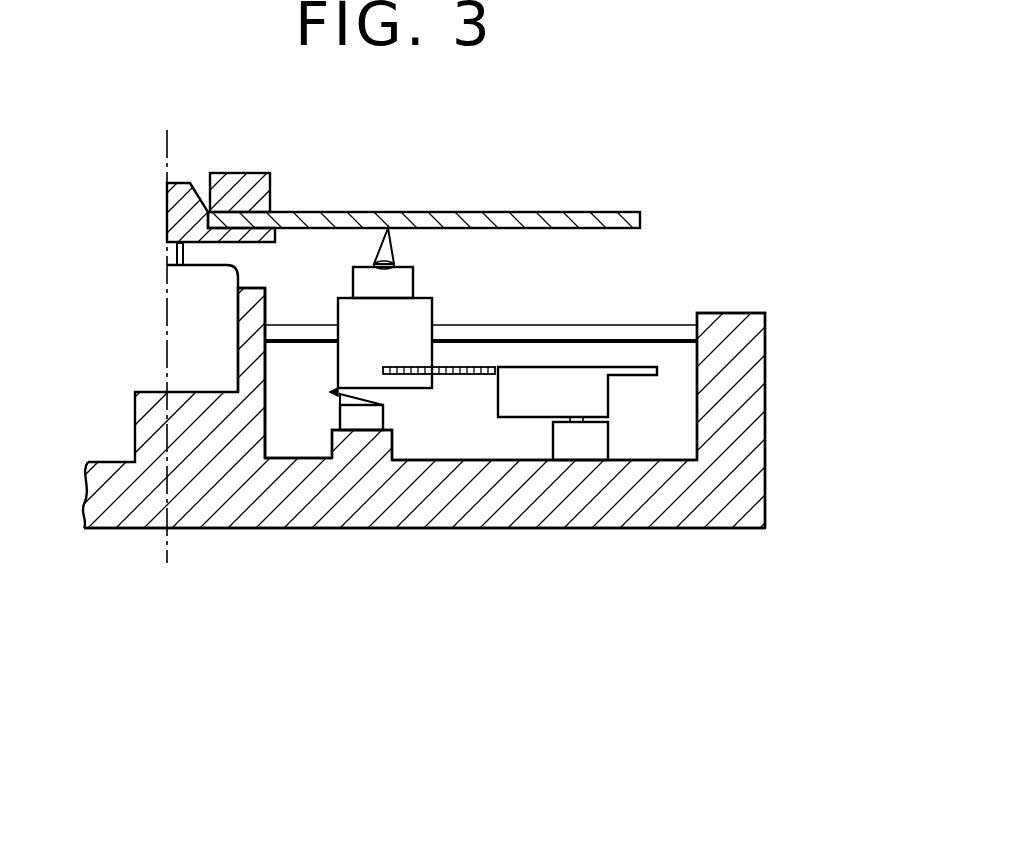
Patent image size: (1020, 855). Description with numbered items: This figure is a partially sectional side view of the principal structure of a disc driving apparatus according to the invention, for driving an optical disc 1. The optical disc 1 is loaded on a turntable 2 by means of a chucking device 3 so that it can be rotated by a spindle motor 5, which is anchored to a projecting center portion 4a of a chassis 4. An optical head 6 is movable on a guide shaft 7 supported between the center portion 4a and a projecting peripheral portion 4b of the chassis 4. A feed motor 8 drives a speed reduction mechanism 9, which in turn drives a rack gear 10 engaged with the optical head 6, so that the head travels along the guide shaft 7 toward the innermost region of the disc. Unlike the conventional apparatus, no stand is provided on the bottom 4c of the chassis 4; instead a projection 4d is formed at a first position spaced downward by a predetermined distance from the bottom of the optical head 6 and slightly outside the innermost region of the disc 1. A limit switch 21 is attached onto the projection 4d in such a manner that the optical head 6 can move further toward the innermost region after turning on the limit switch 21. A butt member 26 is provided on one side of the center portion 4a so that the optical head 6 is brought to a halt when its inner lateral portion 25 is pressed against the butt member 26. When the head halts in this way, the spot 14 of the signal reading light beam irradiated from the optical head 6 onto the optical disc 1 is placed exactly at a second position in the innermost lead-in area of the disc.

The optical disc 1 is at (615, 212).
The turntable 2 is at (180, 200).
The chucking device 3 is at (240, 190).
The chassis 4 is at (740, 506).
The center portion of chassis 4a is at (240, 438).
The peripheral portion of chassis 4b is at (748, 390).
The bottom of chassis 4c is at (537, 505).
The projection 4d is at (348, 446).
The spindle motor 5 is at (192, 330).
The optical head 6 is at (407, 323).
The guide shaft 7 is at (478, 330).
The feed motor 8 is at (588, 445).
The speed reduction mechanism 9 is at (582, 382).
The rack gear 10 is at (463, 375).
The spot of signal reading light beam 14 is at (392, 214).
The limit switch 21 is at (373, 417).
The inner lateral portion 25 is at (338, 290).
The butt member 26 is at (266, 288).